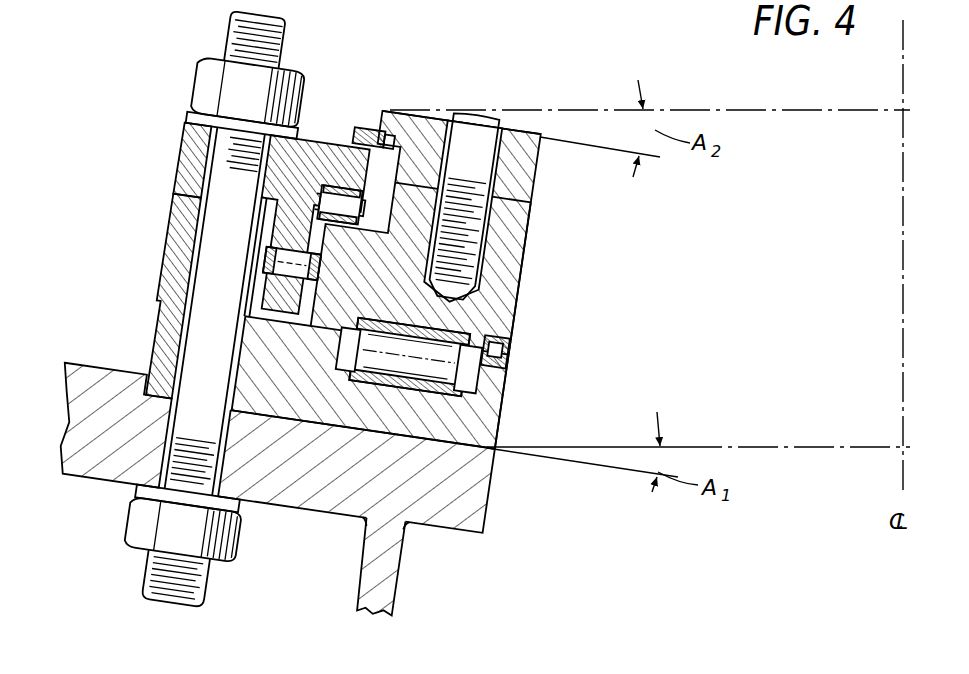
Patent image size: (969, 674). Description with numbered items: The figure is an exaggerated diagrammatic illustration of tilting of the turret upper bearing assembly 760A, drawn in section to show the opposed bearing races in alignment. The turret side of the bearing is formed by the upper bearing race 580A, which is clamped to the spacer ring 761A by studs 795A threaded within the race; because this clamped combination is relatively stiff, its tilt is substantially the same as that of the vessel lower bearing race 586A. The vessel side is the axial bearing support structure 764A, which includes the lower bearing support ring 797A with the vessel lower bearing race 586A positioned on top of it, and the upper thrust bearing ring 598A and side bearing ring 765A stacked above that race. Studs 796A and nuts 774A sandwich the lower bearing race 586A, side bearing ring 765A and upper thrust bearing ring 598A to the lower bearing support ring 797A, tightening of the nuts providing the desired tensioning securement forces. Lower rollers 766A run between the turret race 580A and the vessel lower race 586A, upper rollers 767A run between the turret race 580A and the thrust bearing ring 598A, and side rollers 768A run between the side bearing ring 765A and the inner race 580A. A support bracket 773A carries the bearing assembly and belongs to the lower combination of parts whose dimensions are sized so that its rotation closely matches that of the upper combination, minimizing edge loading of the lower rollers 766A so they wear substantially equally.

The studs 796A is at (233, 18).
The nuts 774A is at (198, 72).
The axial bearing support structure 764A is at (173, 125).
The upper thrust bearing ring 598A is at (190, 160).
The side bearing ring 765A is at (175, 233).
The side rollers 768A is at (280, 260).
The upper rollers 767A is at (352, 193).
The studs 795A is at (477, 150).
The spacer ring 761A is at (520, 178).
The upper bearing assembly 760A is at (552, 211).
The upper bearing race 580A is at (512, 262).
The vessel lower bearing race 586A is at (487, 400).
The lower bearing support ring 797A is at (480, 492).
The lower rollers 766A is at (437, 367).
The support bracket 773A is at (383, 583).